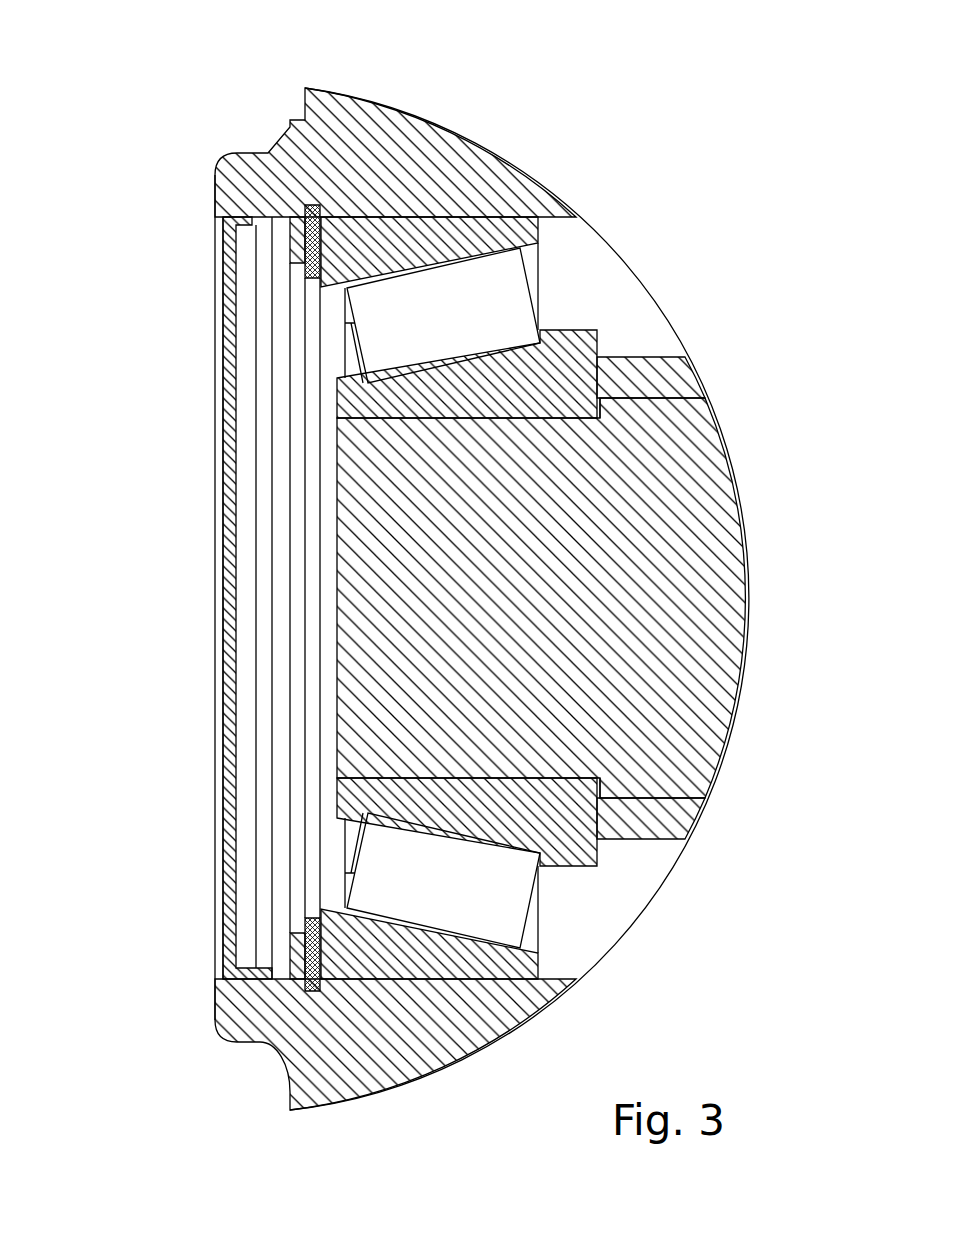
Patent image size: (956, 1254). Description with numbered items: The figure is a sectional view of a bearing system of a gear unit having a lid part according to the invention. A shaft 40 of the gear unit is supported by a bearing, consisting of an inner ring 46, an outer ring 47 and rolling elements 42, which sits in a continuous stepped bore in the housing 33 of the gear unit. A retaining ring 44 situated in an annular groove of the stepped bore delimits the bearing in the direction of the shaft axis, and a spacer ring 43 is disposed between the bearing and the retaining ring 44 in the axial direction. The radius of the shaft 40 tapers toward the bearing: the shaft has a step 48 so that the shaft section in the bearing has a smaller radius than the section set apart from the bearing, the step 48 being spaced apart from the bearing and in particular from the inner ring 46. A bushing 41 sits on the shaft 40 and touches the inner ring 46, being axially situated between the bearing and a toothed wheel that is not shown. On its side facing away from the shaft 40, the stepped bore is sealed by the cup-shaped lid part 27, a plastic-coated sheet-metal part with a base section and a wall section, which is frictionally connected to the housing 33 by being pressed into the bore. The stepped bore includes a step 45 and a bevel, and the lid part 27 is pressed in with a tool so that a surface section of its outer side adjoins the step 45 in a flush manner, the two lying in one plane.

The lid part 27 is at (232, 275).
The housing 33 is at (414, 162).
The shaft 40 is at (648, 538).
The bushing 41 is at (645, 378).
The rolling element 42 is at (490, 302).
The spacer ring 43 is at (314, 222).
The retaining ring 44 is at (297, 228).
The step 45 is at (203, 205).
The inner ring 46 is at (547, 380).
The outer ring 47 is at (462, 238).
The step 48 is at (604, 410).